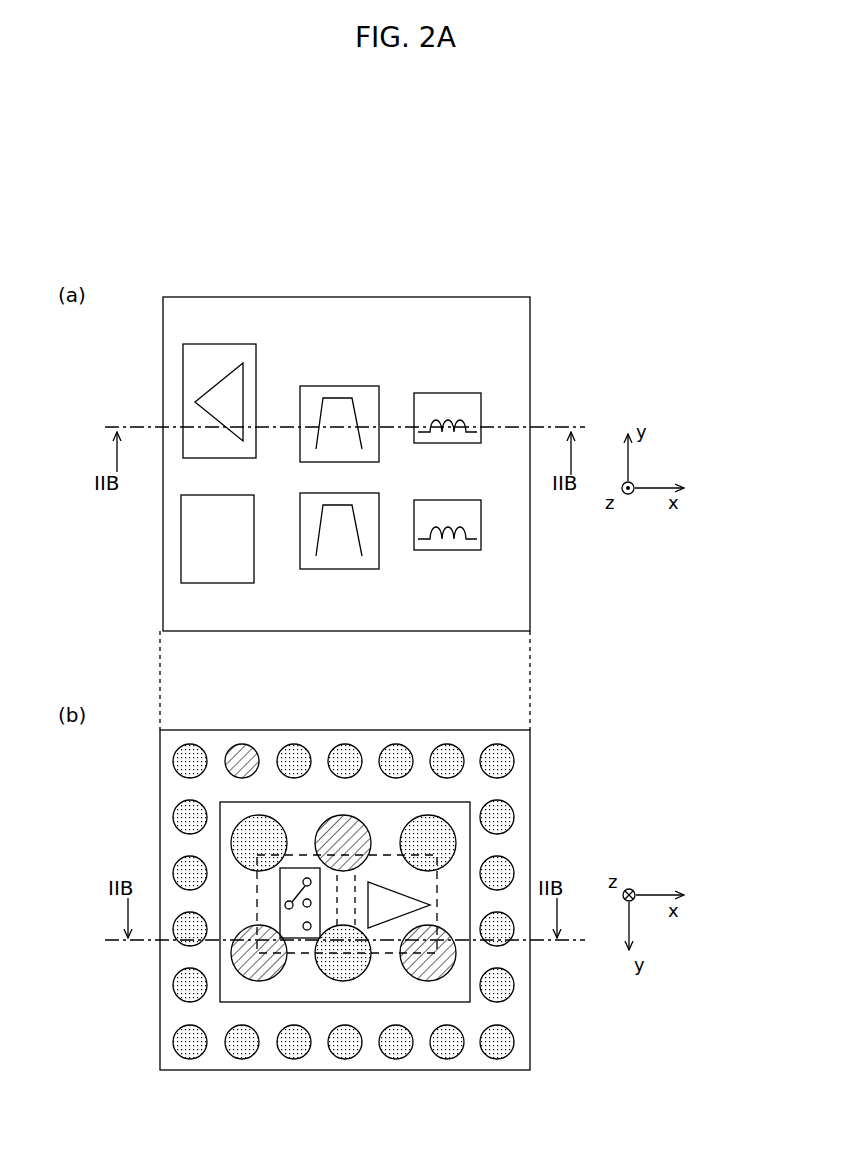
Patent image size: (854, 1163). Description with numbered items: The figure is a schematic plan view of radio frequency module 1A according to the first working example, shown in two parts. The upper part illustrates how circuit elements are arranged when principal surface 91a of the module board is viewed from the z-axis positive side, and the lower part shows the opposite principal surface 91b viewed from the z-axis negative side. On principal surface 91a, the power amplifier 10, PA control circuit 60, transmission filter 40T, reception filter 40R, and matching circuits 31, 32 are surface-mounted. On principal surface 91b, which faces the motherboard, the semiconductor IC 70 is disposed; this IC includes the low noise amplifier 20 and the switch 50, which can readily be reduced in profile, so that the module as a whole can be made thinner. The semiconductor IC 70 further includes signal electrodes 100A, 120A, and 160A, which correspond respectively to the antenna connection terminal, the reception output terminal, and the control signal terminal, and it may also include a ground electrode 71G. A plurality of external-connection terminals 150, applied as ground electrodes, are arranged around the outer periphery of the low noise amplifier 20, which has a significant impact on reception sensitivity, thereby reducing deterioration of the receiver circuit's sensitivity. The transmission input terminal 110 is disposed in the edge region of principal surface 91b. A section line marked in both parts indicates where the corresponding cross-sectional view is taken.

The radio frequency module 1A is at (622, 318).
The principal surface 91a is at (515, 333).
The principal surface 91b is at (512, 778).
The power amplifier 10 is at (216, 344).
The low noise amplifier 20 is at (431, 880).
The matching circuit 31 is at (448, 550).
The matching circuit 32 is at (437, 393).
The reception filter 40R is at (320, 386).
The transmission filter 40T is at (330, 569).
The switch 50 is at (259, 894).
The PA control circuit 60 is at (208, 583).
The semiconductor IC 70 is at (378, 1002).
The ground electrode 71G is at (262, 835).
The signal electrode 100A is at (345, 825).
The transmission input terminal 110 is at (242, 752).
The signal electrode 120A is at (435, 960).
The external-connection terminals 150 is at (185, 766).
The signal electrode 160A is at (262, 962).